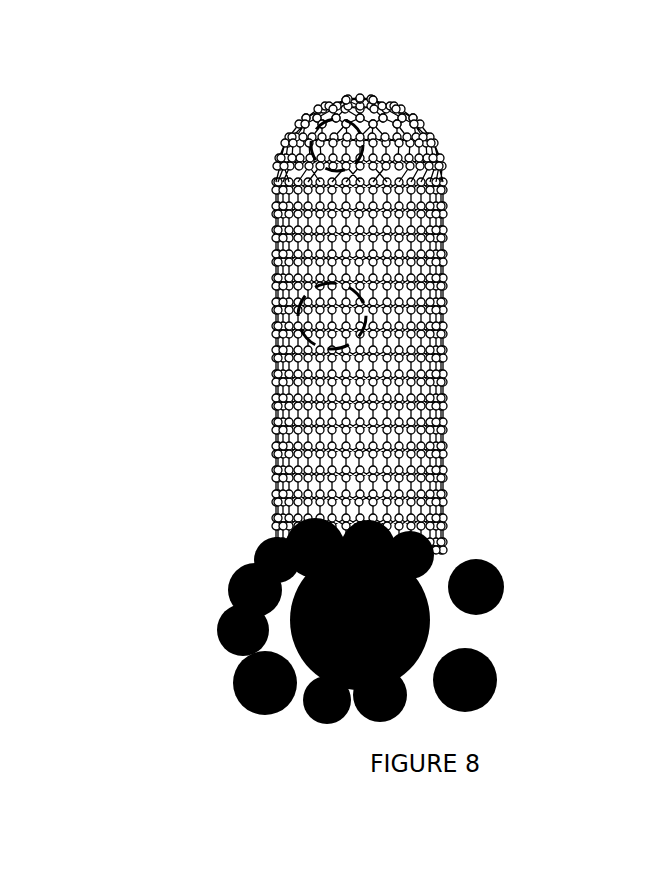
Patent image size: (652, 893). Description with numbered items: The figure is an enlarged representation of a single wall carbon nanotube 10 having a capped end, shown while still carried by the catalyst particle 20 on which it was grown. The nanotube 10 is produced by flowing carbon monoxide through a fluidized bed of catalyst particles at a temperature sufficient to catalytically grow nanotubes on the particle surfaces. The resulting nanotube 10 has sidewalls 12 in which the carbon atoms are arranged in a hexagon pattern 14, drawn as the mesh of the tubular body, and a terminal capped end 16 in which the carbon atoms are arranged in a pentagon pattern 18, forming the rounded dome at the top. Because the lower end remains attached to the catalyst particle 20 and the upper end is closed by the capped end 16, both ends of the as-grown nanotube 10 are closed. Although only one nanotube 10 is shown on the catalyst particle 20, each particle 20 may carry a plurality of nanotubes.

The single wall carbon nanotube 10 is at (218, 307).
The sidewall 12 is at (285, 426).
The hexagon pattern 14 is at (367, 300).
The terminal capped end 16 is at (388, 102).
The pentagon pattern 18 is at (323, 137).
The catalyst particle 20 is at (503, 605).